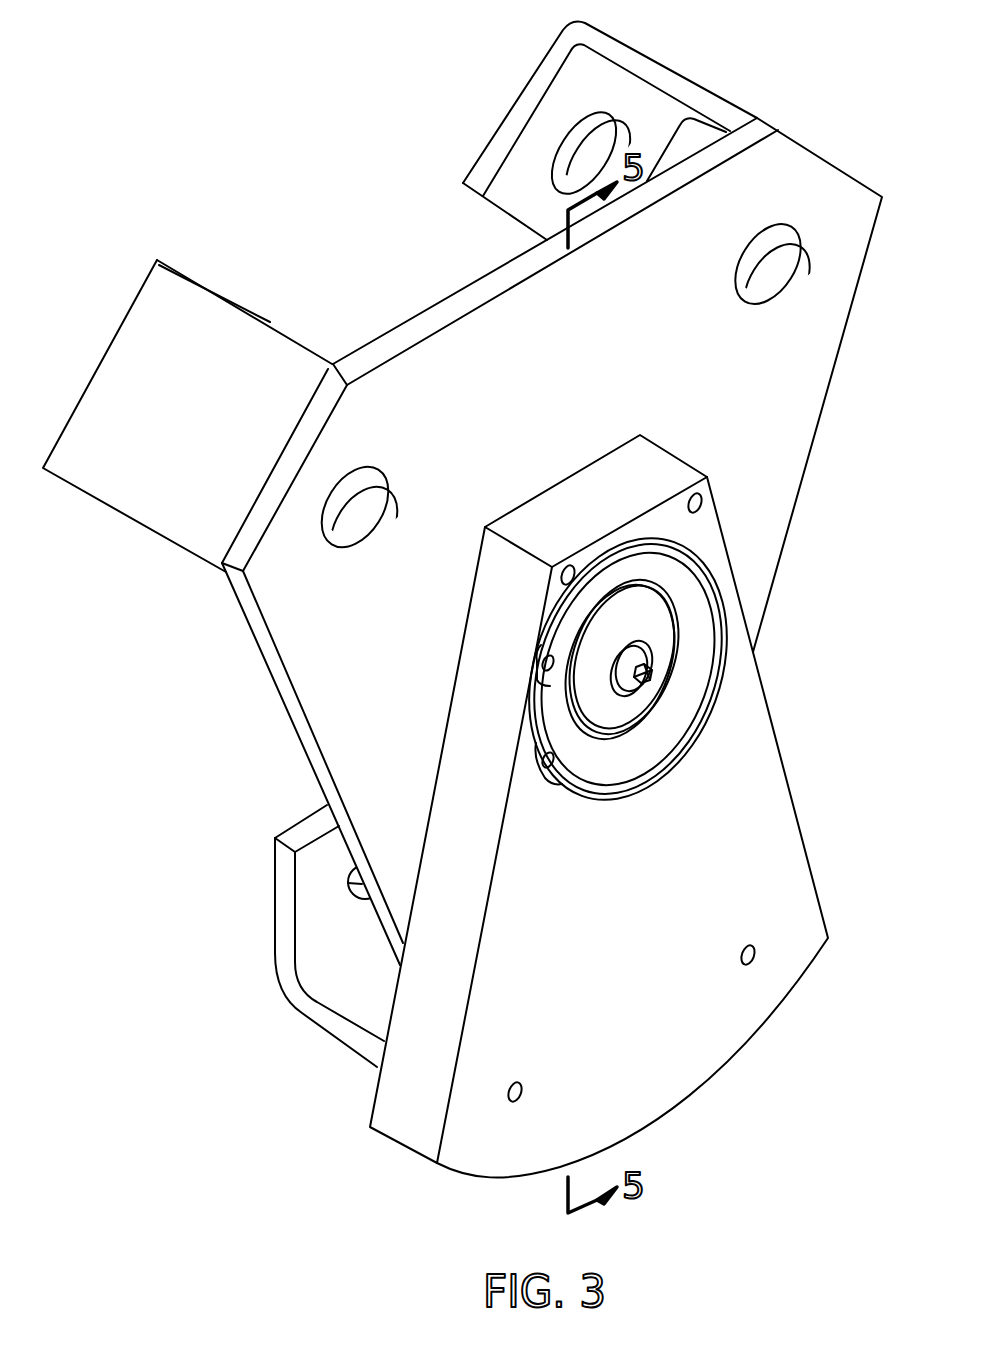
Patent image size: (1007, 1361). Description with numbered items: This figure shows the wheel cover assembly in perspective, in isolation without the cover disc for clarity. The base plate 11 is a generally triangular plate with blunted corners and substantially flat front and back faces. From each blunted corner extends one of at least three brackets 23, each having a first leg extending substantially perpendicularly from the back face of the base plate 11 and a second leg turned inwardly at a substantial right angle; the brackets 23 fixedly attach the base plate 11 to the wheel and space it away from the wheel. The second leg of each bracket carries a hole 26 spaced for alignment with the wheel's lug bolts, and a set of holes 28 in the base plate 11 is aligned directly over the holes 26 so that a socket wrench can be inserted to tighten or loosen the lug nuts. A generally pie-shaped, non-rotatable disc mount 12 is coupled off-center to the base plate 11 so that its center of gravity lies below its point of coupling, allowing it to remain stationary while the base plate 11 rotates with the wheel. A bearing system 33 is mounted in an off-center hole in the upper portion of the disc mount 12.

The base plate 11 is at (572, 384).
The disc mount 12 is at (678, 890).
The brackets 23 is at (517, 100).
The hole 26 is at (607, 143).
The holes 28 is at (778, 278).
The bearing system 33 is at (706, 612).